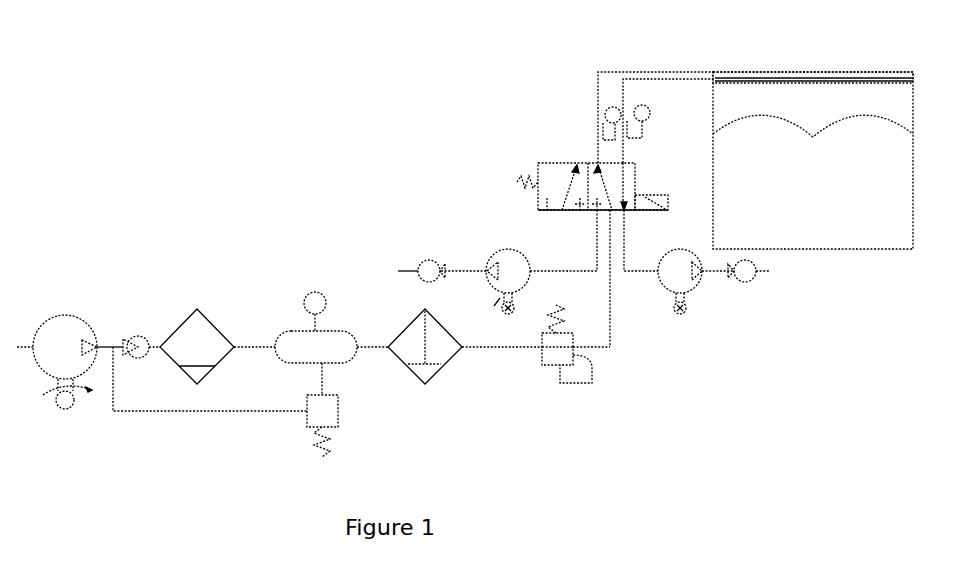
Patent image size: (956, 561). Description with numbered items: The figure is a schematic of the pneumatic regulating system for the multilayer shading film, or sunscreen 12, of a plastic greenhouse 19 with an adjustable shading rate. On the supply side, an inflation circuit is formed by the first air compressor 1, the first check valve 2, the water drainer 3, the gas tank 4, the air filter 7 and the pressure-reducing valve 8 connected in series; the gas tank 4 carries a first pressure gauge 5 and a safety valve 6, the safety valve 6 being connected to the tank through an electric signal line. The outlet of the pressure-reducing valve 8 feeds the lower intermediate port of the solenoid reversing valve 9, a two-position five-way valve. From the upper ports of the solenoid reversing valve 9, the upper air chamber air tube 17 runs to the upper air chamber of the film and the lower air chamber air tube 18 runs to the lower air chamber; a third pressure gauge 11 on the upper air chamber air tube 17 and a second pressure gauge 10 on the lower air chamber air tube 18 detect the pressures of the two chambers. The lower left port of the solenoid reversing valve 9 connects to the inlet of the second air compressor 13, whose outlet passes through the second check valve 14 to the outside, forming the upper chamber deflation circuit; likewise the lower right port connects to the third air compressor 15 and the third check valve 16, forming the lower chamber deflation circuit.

The first air compressor 1 is at (58, 328).
The first check valve 2 is at (130, 333).
The water drainer 3 is at (192, 308).
The gas tank 4 is at (290, 328).
The first pressure gauge 5 is at (313, 298).
The safety valve 6 is at (340, 423).
The air filter 7 is at (432, 378).
The pressure-reducing valve 8 is at (550, 368).
The solenoid reversing valve 9 is at (550, 160).
The second pressure gauge 10 is at (642, 110).
The third pressure gauge 11 is at (603, 108).
The sunscreen 12 is at (848, 72).
The second air compressor 13 is at (490, 253).
The second check valve 14 is at (422, 256).
The third air compressor 15 is at (695, 298).
The third check valve 16 is at (752, 280).
The upper air chamber air tube 17 is at (625, 68).
The lower air chamber air tube 18 is at (680, 78).
The plastic greenhouse 19 is at (887, 243).